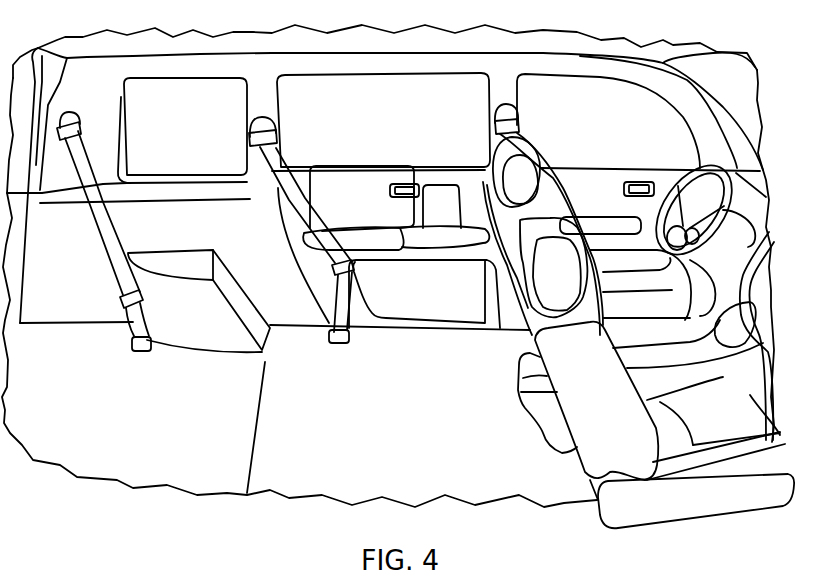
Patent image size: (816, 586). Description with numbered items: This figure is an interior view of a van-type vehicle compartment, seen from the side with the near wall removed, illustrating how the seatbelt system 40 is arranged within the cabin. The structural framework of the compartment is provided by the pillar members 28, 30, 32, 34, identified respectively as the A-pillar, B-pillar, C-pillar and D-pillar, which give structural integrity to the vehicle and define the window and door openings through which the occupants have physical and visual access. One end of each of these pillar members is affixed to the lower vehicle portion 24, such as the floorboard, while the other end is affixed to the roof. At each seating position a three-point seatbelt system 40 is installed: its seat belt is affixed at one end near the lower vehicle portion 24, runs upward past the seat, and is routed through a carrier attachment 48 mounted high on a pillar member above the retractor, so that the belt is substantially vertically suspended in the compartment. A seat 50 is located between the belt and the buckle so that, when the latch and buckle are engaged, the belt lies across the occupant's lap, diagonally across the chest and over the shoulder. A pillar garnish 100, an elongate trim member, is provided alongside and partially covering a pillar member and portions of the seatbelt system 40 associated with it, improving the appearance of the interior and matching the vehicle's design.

The lower vehicle portion 24 is at (446, 406).
The pillar member 28 is at (709, 113).
The pillar member 30 is at (507, 88).
The pillar member 32 is at (263, 90).
The pillar member 34 is at (92, 90).
The seatbelt system 40 is at (97, 160).
The carrier attachment 48 is at (76, 120).
The seat 50 is at (596, 374).
The pillar garnish 100 is at (266, 244).